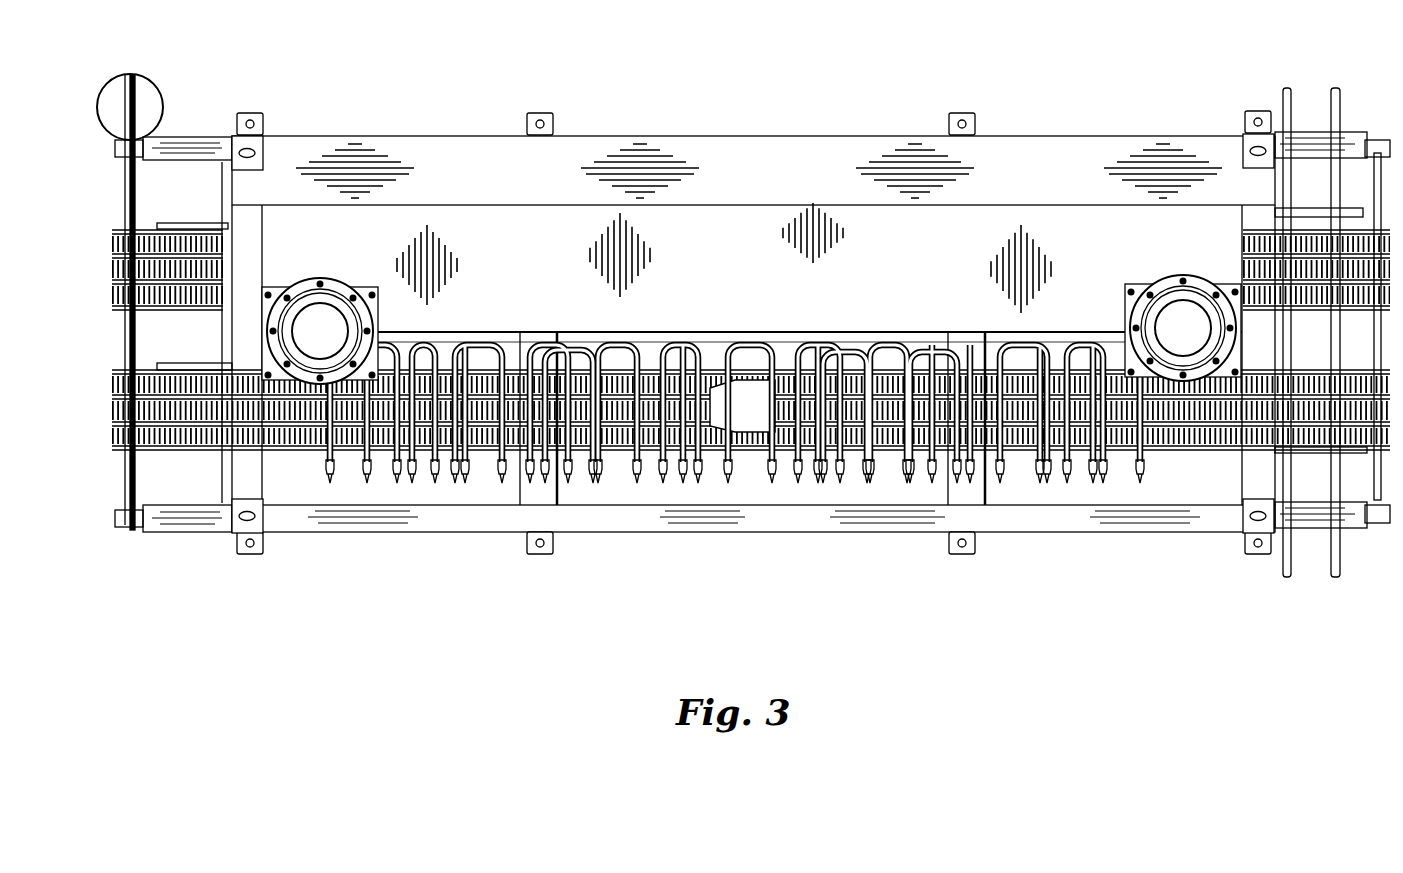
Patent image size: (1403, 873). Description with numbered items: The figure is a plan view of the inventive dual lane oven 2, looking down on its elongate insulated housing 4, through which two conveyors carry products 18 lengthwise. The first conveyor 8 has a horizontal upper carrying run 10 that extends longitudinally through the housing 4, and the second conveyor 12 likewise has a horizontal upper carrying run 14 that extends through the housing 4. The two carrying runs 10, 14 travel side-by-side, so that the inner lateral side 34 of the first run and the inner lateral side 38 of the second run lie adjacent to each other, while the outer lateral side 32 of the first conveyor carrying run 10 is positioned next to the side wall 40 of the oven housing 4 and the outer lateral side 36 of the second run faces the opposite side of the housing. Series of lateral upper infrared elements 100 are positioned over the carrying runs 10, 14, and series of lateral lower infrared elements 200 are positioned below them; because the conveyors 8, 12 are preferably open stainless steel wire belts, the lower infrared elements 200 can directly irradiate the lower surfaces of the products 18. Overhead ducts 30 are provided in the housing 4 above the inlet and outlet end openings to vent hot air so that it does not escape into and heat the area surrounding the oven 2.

The dual lane oven 2 is at (736, 312).
The elongate insulated housing 4 is at (1018, 148).
The first conveyor 8 is at (742, 481).
The upper carrying run of first conveyor 10 is at (751, 481).
The second conveyor 12 is at (167, 288).
The upper carrying run of second conveyor 14 is at (158, 290).
The products 18 is at (752, 425).
The overhead ducts 30 is at (330, 312).
The outer lateral side of first conveyor carrying run 32 is at (160, 435).
The inner lateral side of first conveyor carrying run 34 is at (130, 356).
The outer lateral side of second conveyor carrying run 36 is at (167, 263).
The inner lateral side of second conveyor carrying run 38 is at (130, 326).
The side wall 40 is at (898, 535).
The upper infrared elements 100 is at (470, 345).
The lower infrared elements 200 is at (612, 338).